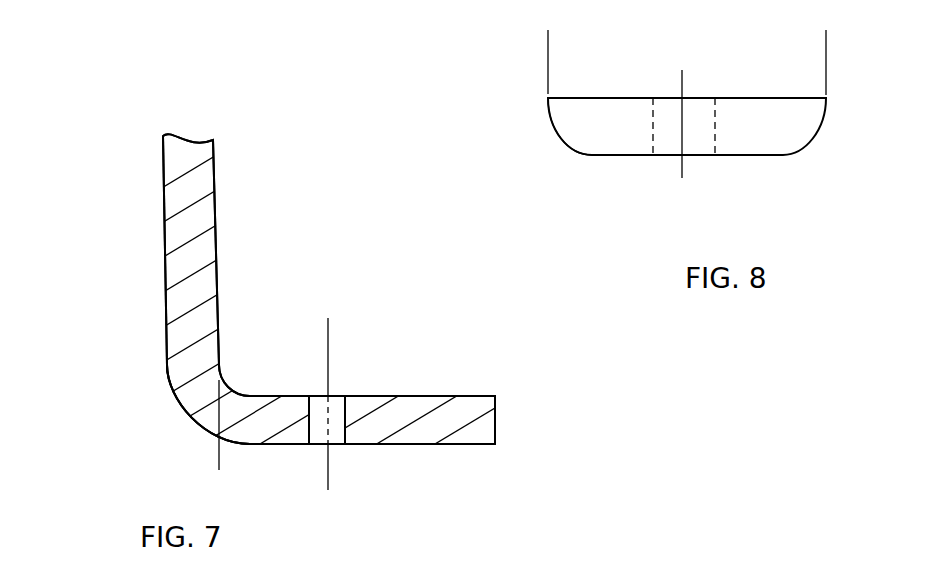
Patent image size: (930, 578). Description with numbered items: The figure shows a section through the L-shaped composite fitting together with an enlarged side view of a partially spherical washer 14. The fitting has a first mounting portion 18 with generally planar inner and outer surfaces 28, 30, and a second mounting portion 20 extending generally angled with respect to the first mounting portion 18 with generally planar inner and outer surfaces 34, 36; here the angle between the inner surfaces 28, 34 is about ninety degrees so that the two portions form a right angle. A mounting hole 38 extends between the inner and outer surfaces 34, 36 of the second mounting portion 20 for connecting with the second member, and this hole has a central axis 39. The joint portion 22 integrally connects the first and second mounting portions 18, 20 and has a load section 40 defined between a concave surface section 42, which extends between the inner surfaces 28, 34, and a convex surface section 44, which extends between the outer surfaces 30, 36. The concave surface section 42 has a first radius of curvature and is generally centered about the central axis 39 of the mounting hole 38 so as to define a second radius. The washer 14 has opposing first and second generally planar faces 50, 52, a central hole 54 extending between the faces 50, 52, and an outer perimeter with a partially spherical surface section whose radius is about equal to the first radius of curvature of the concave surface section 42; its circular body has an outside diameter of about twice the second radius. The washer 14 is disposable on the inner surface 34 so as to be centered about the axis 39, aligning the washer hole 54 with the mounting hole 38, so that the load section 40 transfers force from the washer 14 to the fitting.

In FIG. 8, the washer 14 is at (503, 90).
In FIG. 7, the first mounting portion 18 is at (123, 234).
In FIG. 7, the second mounting portion 20 is at (405, 452).
In FIG. 7, the joint portion 22 is at (148, 352).
In FIG. 7, the inner surface 28 is at (217, 208).
In FIG. 7, the outer surface 30 is at (163, 145).
In FIG. 7, the inner surface 34 is at (460, 394).
In FIG. 7, the outer surface 36 is at (453, 445).
In FIG. 7, the mounting hole 38 is at (340, 406).
In FIG. 7, the central axis 39 is at (328, 335).
In FIG. 7, the load section 40 is at (183, 384).
In FIG. 7, the concave surface section 42 is at (222, 380).
In FIG. 7, the convex surface section 44 is at (180, 418).
In FIG. 8, the first face 50 is at (758, 98).
In FIG. 8, the second face 52 is at (748, 156).
In FIG. 8, the central hole 54 is at (653, 147).